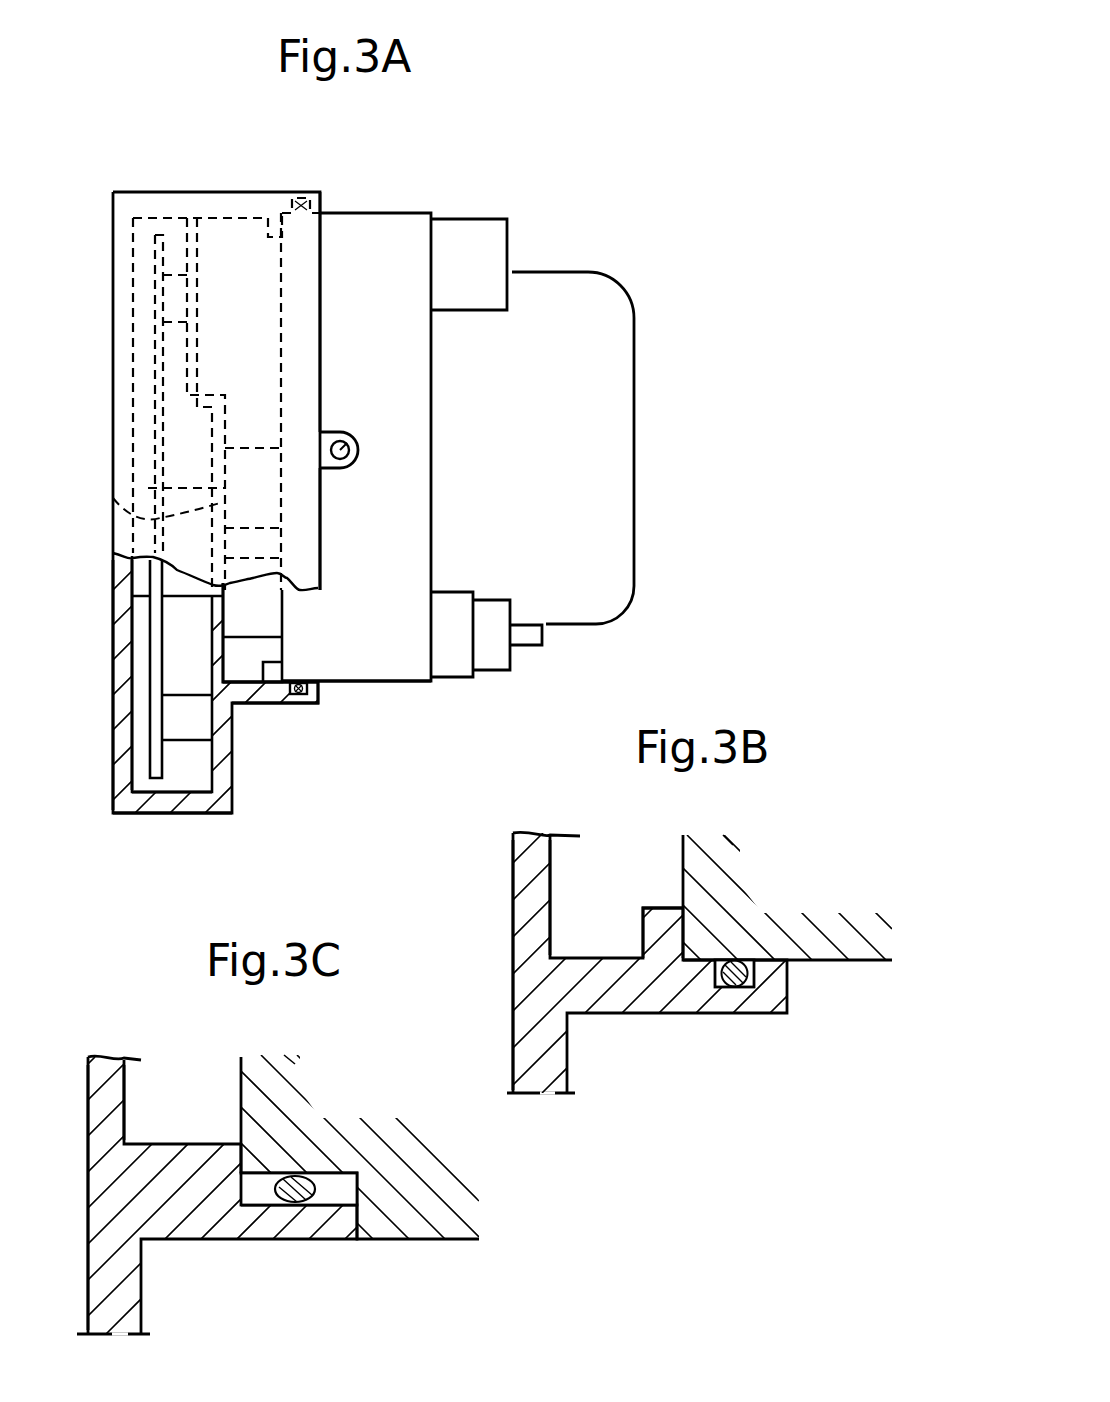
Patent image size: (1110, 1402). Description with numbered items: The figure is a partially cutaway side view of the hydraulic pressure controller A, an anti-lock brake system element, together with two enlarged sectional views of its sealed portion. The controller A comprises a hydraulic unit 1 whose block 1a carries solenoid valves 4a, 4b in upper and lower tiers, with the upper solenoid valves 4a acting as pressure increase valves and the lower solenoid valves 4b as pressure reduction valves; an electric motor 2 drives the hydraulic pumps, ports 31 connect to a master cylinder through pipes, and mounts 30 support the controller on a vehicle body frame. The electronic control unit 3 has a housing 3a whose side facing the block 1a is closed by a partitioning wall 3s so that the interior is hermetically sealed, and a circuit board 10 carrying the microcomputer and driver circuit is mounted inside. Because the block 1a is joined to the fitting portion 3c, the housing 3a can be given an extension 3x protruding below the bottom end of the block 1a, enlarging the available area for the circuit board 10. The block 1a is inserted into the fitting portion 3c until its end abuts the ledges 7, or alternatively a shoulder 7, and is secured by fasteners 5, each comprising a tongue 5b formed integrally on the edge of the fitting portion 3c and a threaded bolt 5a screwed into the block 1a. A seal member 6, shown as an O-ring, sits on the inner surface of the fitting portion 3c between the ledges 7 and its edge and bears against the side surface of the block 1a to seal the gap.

In FIG. 3A, the hydraulic pressure controller A is at (118, 150).
In FIG. 3A, the hydraulic unit 1 is at (418, 210).
In FIG. 3A, the block 1a is at (390, 663).
In FIG. 3B, the block 1a is at (818, 876).
In FIG. 3C, the block 1a is at (436, 1171).
In FIG. 3A, the electric motor 2 is at (645, 336).
In FIG. 3A, the electronic control unit 3 is at (210, 185).
In FIG. 3A, the housing 3a is at (120, 700).
In FIG. 3A, the fitting portion 3c is at (252, 693).
In FIG. 3B, the fitting portion 3c is at (640, 992).
In FIG. 3C, the fitting portion 3c is at (206, 1221).
In FIG. 3A, the partitioning wall 3s is at (113, 497).
In FIG. 3B, the partitioning wall 3s is at (527, 905).
In FIG. 3C, the partitioning wall 3s is at (106, 1089).
In FIG. 3A, the extension 3x is at (232, 797).
In FIG. 3A, the solenoid valves 4a is at (252, 480).
In FIG. 3A, the solenoid valves 4b is at (268, 623).
In FIG. 3A, the fasteners 5 is at (370, 433).
In FIG. 3A, the threaded bolt 5a is at (348, 435).
In FIG. 3A, the tongue 5b is at (352, 468).
In FIG. 3A, the seal member 6 is at (300, 190).
In FIG. 3B, the seal member 6 is at (732, 985).
In FIG. 3C, the seal member 6 is at (295, 1200).
In FIG. 3B, the ledges 7 is at (660, 930).
In FIG. 3C, the ledges 7 is at (236, 1158).
In FIG. 3A, the circuit board 10 is at (160, 607).
In FIG. 3A, the mounts 30 is at (462, 660).
In FIG. 3A, the ports 31 is at (484, 243).